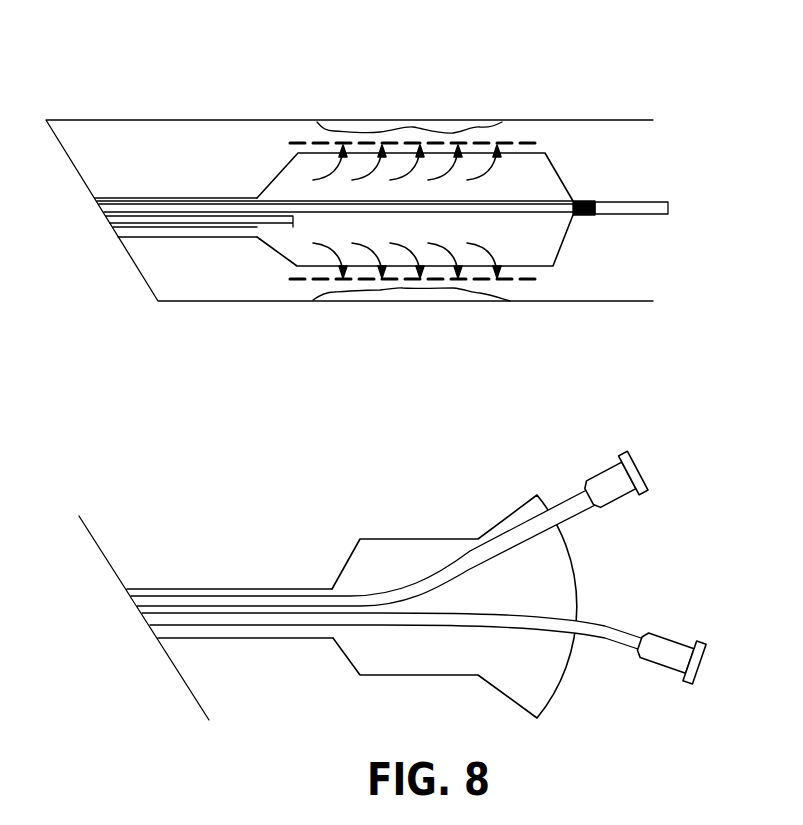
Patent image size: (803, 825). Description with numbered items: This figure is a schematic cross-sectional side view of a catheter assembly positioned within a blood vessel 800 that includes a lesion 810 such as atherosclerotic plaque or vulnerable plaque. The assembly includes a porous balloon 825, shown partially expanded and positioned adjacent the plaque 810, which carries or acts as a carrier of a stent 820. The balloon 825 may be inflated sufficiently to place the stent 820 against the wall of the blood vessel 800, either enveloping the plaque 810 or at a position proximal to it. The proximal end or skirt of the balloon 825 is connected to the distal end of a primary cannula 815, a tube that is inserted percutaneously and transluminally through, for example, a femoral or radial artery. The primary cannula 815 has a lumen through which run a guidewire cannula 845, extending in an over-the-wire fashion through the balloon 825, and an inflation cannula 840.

The blood vessel 800 is at (624, 120).
The lesion 810 is at (473, 122).
The primary cannula 815 is at (173, 237).
The stent 820 is at (523, 142).
The balloon 825 is at (563, 175).
The inflation cannula 840 is at (178, 212).
The guidewire cannula 845 is at (645, 217).